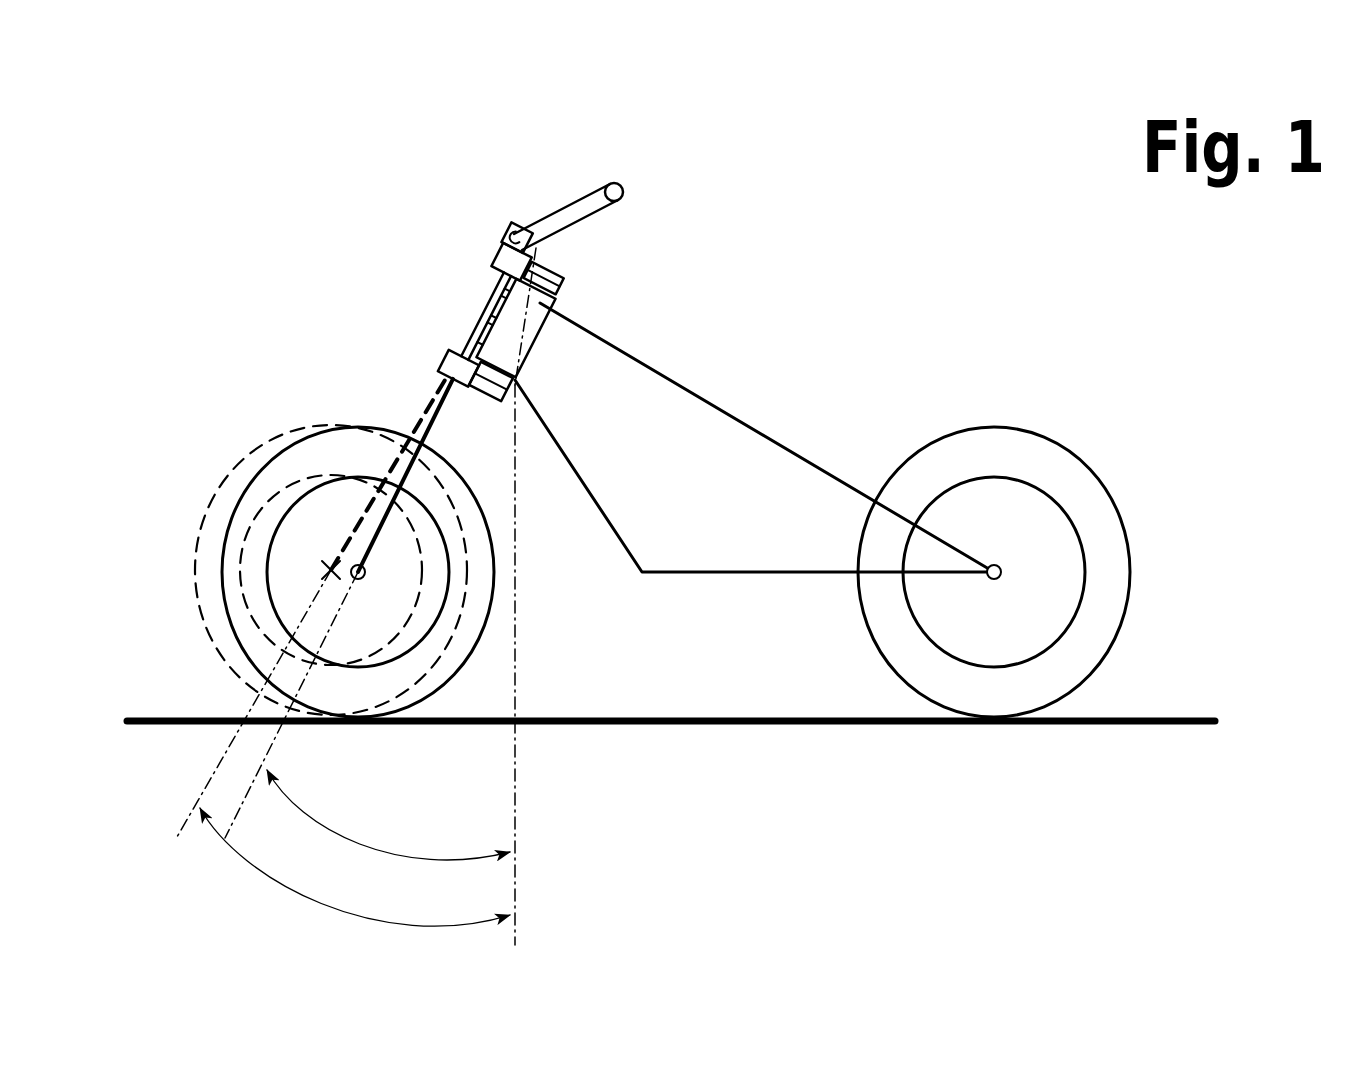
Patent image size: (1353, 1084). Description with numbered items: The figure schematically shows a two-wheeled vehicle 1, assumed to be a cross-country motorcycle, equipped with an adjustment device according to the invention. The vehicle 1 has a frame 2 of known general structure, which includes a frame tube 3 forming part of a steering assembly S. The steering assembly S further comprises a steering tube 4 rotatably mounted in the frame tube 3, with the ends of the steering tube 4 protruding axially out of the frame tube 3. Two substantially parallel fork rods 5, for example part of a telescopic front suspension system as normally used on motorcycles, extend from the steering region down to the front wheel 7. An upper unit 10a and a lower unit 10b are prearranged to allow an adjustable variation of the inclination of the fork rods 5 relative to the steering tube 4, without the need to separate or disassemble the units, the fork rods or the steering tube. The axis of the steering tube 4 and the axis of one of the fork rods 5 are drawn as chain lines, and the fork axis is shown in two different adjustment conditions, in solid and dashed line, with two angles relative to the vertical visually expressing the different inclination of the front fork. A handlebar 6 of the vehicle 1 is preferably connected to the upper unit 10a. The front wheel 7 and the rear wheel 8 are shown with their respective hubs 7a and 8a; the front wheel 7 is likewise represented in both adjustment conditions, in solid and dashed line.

The two-wheeled vehicle 1 is at (929, 294).
The frame 2 is at (779, 431).
The frame tube 3 is at (515, 328).
The steering tube 4 is at (544, 278).
The fork rods 5 is at (435, 423).
The handlebar 6 is at (580, 189).
The front wheel 7 is at (221, 592).
The front wheel hub 7a is at (330, 569).
The rear wheel 8 is at (1092, 461).
The rear wheel hub 8a is at (1002, 572).
The upper unit 10a is at (516, 251).
The lower unit 10b is at (458, 368).
The steering assembly S is at (427, 270).